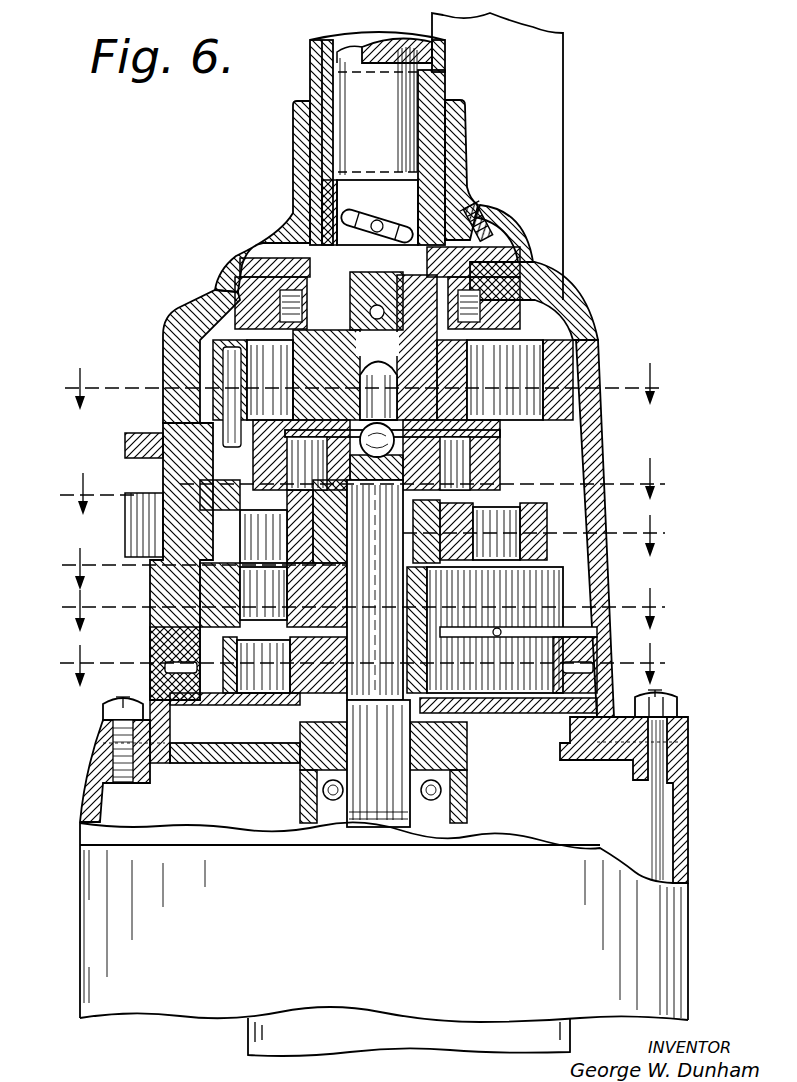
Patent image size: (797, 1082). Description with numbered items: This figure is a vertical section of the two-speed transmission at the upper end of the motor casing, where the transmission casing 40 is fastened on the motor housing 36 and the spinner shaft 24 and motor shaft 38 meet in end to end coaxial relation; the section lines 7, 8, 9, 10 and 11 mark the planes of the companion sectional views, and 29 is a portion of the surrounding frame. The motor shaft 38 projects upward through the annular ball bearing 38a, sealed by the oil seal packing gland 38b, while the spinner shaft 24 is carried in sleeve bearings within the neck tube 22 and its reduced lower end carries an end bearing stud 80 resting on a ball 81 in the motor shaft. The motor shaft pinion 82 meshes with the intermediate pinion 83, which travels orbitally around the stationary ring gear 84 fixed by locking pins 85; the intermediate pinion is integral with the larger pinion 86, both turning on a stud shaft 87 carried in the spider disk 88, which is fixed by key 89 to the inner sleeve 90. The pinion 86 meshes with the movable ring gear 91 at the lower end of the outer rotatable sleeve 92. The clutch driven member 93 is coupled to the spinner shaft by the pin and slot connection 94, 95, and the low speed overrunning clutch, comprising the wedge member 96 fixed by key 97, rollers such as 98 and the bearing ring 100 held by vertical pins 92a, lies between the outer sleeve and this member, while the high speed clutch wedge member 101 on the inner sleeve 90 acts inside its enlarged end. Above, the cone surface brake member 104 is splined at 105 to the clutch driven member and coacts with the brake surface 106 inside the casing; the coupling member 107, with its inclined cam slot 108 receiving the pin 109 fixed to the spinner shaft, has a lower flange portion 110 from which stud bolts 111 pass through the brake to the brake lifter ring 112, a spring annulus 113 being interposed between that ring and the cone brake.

The section line 7- 7 is at (372, 665).
The section line 8- 8 is at (369, 552).
The section line 9- 9 is at (370, 610).
The section line 10- 10 is at (369, 386).
The section line 11- 11 is at (372, 486).
The neck tube 22 is at (318, 77).
The spinner shaft 24 is at (357, 60).
The frame casing 29 is at (553, 89).
The motor housing 36 is at (90, 971).
The motor shaft 38 is at (390, 808).
The annular ball bearing 38a is at (325, 791).
The oil seal packing gland 38b is at (450, 742).
The transmission casing 40 is at (298, 144).
The end bearing stud 80 is at (470, 399).
The ball 81 is at (452, 424).
The motor shaft pinion 82 is at (355, 682).
The intermediate pinion 83 is at (222, 696).
The stationary ring gear 84 is at (190, 677).
The locking pins 85 is at (166, 668).
The pinion 86 is at (225, 597).
The stud shaft 87 is at (259, 690).
The spider disk 88 is at (228, 517).
The key 89 is at (315, 527).
The inner sleeve 90 is at (427, 522).
The movable ring gear 91 is at (193, 580).
The outer rotatable sleeve 92 is at (205, 473).
The vertical pins 92a is at (215, 340).
The clutch driven member 93 is at (425, 360).
The pin and slot connection 94 is at (378, 296).
The pin and slot connection 95 is at (466, 215).
The wedge member 96 is at (303, 395).
The key 97 is at (330, 368).
The roller 98 is at (262, 367).
The bearing ring 100 is at (205, 357).
The wedge member 101 is at (152, 456).
The cone surface brake member 104 is at (221, 264).
The splined connection 105 is at (320, 250).
The brake surface 106 is at (240, 285).
The coupling member 107 is at (350, 176).
The inclined cam slot 108 is at (361, 202).
The pin 109 is at (380, 222).
The lower flange portion 110 is at (506, 244).
The stud bolts 111 is at (512, 266).
The brake lifter ring 112 is at (467, 306).
The spring annulus 113 is at (500, 285).